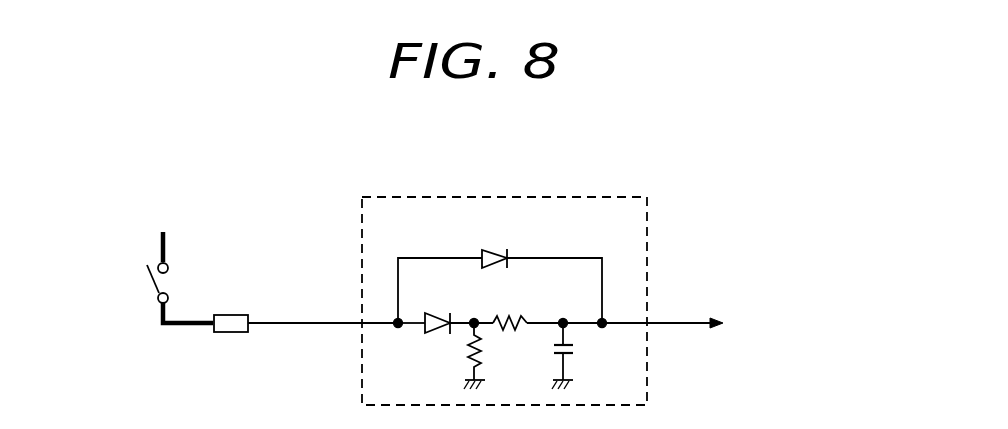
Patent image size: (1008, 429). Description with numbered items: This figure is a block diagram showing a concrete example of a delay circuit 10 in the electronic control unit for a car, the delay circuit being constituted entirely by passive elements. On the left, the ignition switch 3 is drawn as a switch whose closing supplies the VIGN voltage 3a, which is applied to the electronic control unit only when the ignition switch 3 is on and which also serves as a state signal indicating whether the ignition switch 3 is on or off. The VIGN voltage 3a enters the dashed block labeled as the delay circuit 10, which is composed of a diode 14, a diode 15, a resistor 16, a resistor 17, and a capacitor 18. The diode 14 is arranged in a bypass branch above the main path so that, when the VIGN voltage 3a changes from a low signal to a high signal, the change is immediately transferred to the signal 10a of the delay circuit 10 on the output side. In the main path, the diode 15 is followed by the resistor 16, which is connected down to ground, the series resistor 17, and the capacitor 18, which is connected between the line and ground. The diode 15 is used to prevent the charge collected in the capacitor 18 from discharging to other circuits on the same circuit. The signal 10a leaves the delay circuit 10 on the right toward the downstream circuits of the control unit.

The ignition switch 3 is at (146, 285).
The VIGN voltage 3a is at (297, 322).
The delay circuit 10 is at (383, 197).
The signal of the delay circuit on the output side 10a is at (675, 322).
The diode 14 is at (490, 250).
The diode 15 is at (428, 312).
The resistor 16 is at (483, 360).
The resistor 17 is at (511, 317).
The capacitor 18 is at (578, 357).